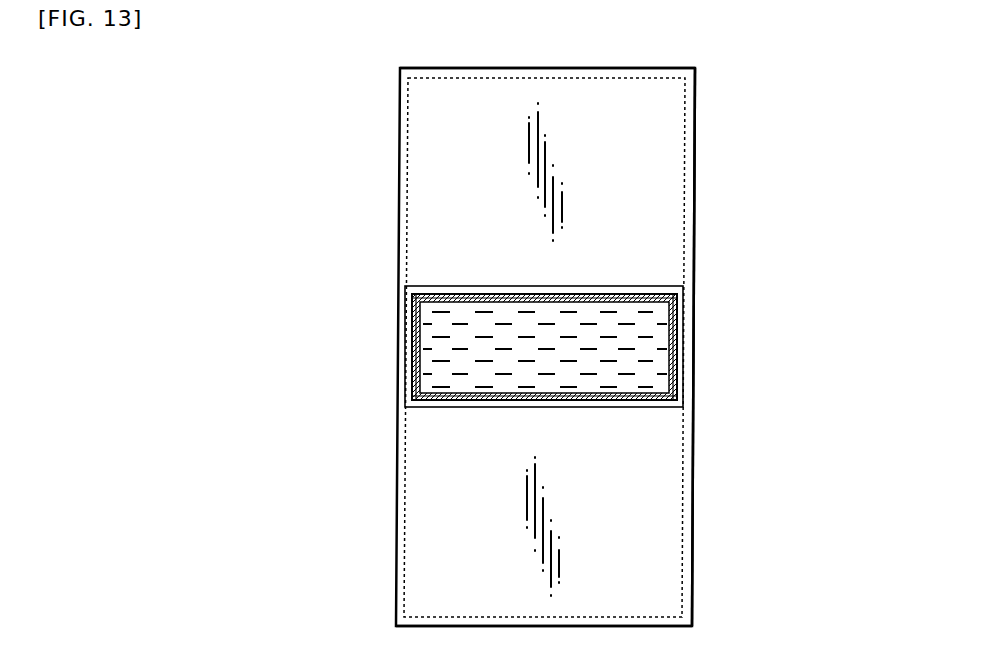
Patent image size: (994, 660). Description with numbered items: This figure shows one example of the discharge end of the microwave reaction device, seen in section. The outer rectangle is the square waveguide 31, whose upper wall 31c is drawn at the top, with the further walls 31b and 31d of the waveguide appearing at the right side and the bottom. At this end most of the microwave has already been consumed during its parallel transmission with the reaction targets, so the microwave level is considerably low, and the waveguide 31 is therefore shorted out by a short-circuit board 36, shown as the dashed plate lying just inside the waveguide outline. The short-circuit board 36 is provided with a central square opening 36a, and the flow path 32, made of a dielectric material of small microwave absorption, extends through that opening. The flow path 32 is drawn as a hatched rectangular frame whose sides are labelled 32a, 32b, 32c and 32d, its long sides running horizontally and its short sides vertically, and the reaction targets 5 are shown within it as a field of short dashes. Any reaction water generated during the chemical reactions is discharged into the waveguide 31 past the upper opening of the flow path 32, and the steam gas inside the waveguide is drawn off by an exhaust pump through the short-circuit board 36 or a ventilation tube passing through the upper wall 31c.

The waveguide 31 is at (700, 140).
The right side portion of housing 31b is at (694, 207).
The upper wall of the waveguide 31c is at (450, 68).
The bottom portion of housing 31d is at (645, 628).
The short-circuit board 36 is at (477, 180).
The central square opening 36a is at (505, 292).
The flow path 32 is at (625, 295).
The left side of frame 32a is at (415, 357).
The right side of frame 32b is at (678, 351).
The upper side of frame 32c is at (445, 296).
The lower side of frame 32d is at (482, 398).
The reaction targets 5 is at (585, 365).